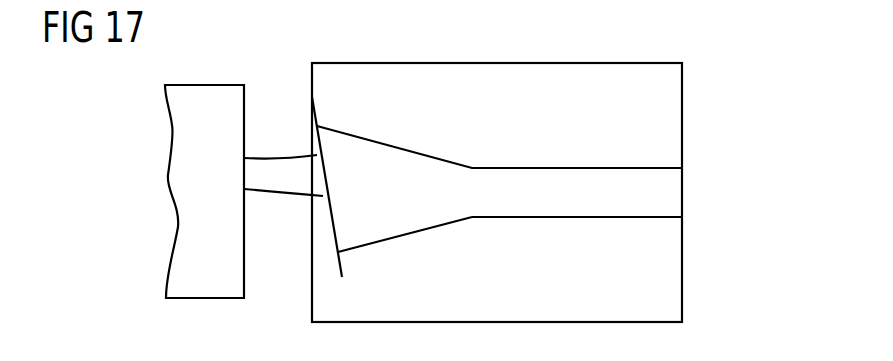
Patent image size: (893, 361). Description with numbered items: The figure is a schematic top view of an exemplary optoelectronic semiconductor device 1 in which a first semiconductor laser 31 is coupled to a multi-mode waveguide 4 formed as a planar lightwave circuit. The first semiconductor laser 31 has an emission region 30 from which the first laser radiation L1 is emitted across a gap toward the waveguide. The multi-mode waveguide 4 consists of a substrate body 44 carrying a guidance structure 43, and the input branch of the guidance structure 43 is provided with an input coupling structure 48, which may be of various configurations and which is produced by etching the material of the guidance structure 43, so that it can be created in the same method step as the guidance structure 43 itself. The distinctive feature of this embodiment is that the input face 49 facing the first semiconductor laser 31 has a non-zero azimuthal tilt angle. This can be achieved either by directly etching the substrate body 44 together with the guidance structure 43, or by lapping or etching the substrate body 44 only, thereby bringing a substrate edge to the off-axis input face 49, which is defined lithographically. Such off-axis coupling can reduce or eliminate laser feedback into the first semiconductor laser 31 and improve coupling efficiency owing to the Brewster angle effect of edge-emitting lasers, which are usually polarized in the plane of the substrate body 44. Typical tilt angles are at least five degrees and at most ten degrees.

The optoelectronic semiconductor device 1 is at (714, 46).
The multi-mode waveguide 4 is at (744, 125).
The emission region 30 is at (243, 177).
The first semiconductor laser 31 is at (203, 96).
The guidance structure 43 is at (677, 198).
The substrate body 44 is at (677, 131).
The input coupling structure 48 is at (391, 228).
The input face 49 is at (321, 171).
The first laser radiation L1 is at (274, 169).